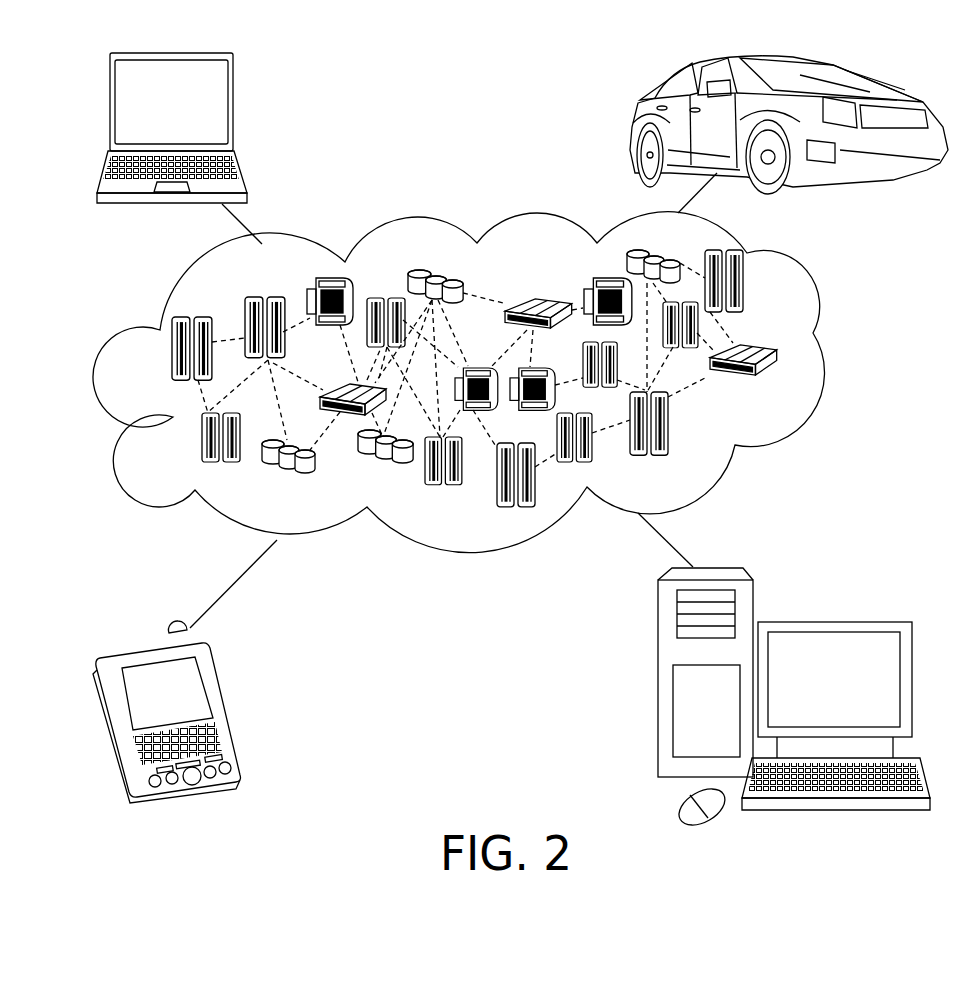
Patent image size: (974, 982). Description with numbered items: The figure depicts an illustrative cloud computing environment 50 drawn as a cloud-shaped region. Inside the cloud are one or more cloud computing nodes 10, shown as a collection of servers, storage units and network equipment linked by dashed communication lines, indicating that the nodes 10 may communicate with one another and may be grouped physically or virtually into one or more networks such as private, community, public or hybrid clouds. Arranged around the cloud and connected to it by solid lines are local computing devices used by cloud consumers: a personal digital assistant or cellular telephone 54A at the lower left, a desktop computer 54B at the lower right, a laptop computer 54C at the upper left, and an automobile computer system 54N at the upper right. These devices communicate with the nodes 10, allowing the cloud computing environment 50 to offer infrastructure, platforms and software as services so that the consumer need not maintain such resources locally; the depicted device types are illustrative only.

The cloud computing node 10 is at (779, 385).
The cloud computing environment 50 is at (832, 358).
The personal digital assistant or cellular telephone 54A is at (223, 704).
The desktop computer 54B is at (832, 622).
The laptop computer 54C is at (234, 111).
The automobile computer system 54N is at (632, 126).